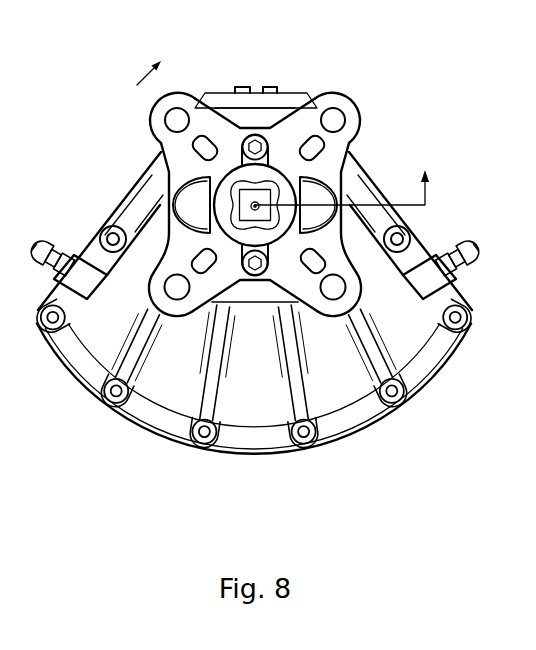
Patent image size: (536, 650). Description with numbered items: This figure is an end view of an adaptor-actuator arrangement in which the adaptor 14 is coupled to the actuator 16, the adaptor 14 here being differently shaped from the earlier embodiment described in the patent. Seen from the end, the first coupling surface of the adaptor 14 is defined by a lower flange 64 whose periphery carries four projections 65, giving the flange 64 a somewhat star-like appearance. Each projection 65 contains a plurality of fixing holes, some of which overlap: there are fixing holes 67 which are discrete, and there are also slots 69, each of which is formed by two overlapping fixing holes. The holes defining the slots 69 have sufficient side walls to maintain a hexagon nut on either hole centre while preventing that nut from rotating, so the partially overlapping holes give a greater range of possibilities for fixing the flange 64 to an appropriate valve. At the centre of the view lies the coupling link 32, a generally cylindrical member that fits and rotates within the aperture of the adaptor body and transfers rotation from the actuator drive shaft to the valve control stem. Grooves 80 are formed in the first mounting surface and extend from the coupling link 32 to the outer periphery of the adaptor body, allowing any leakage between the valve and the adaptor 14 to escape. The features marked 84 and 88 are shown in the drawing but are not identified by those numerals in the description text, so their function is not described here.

The adaptor 14 is at (420, 72).
The actuator 16 is at (257, 480).
The coupling link 32 is at (165, 197).
The lower flange 64 is at (370, 130).
The projections 65 is at (156, 115).
The fixing holes 67 is at (181, 118).
The slots 69 is at (190, 147).
The grooves 80 is at (158, 160).
The recess 84 is at (335, 186).
The pivot boss 88 is at (168, 205).